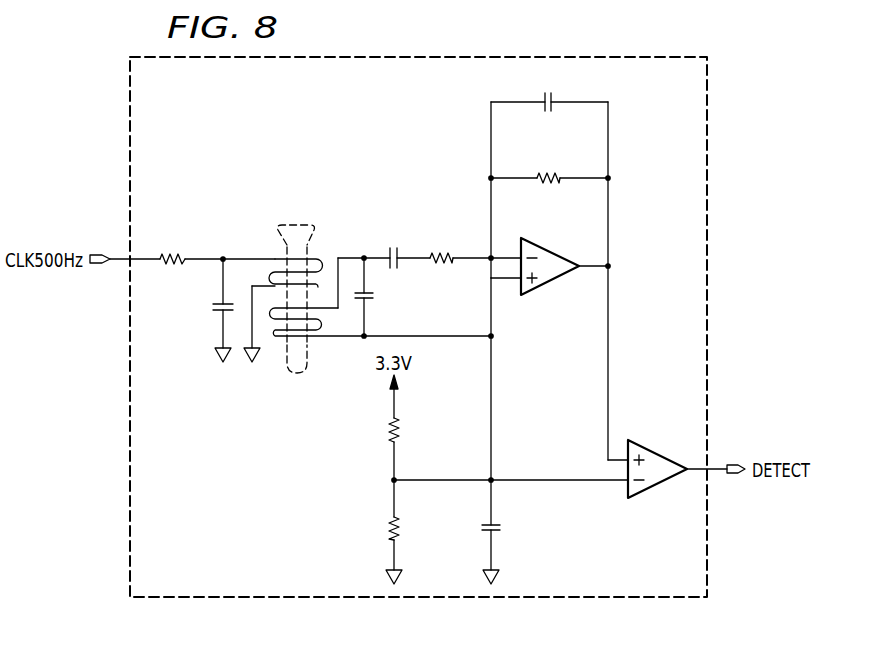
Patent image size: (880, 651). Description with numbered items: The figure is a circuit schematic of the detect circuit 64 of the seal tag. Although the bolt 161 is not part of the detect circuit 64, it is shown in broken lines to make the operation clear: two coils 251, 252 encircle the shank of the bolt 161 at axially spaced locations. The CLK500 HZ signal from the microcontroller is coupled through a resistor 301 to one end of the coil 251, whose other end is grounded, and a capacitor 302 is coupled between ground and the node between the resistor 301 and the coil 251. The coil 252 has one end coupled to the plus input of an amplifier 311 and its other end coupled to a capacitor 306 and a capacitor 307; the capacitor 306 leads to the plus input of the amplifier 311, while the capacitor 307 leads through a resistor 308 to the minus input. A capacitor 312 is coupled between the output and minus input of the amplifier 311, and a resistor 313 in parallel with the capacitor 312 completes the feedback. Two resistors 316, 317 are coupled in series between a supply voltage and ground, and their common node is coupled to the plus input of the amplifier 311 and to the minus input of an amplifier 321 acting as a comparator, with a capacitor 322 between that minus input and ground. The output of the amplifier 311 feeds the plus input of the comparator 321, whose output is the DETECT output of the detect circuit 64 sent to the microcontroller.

The detect circuit 64 is at (262, 501).
The bolt 161 is at (293, 224).
The coil 251 is at (318, 257).
The coil 252 is at (278, 338).
The resistor 301 is at (174, 255).
The capacitor 302 is at (213, 306).
The capacitor 306 is at (375, 296).
The capacitor 307 is at (391, 247).
The resistor 308 is at (442, 251).
The amplifier 311 is at (541, 247).
The capacitor 312 is at (549, 93).
The resistor 313 is at (553, 172).
The resistor 316 is at (386, 437).
The resistor 317 is at (388, 535).
The amplifier 321 is at (658, 487).
The capacitor 322 is at (502, 530).